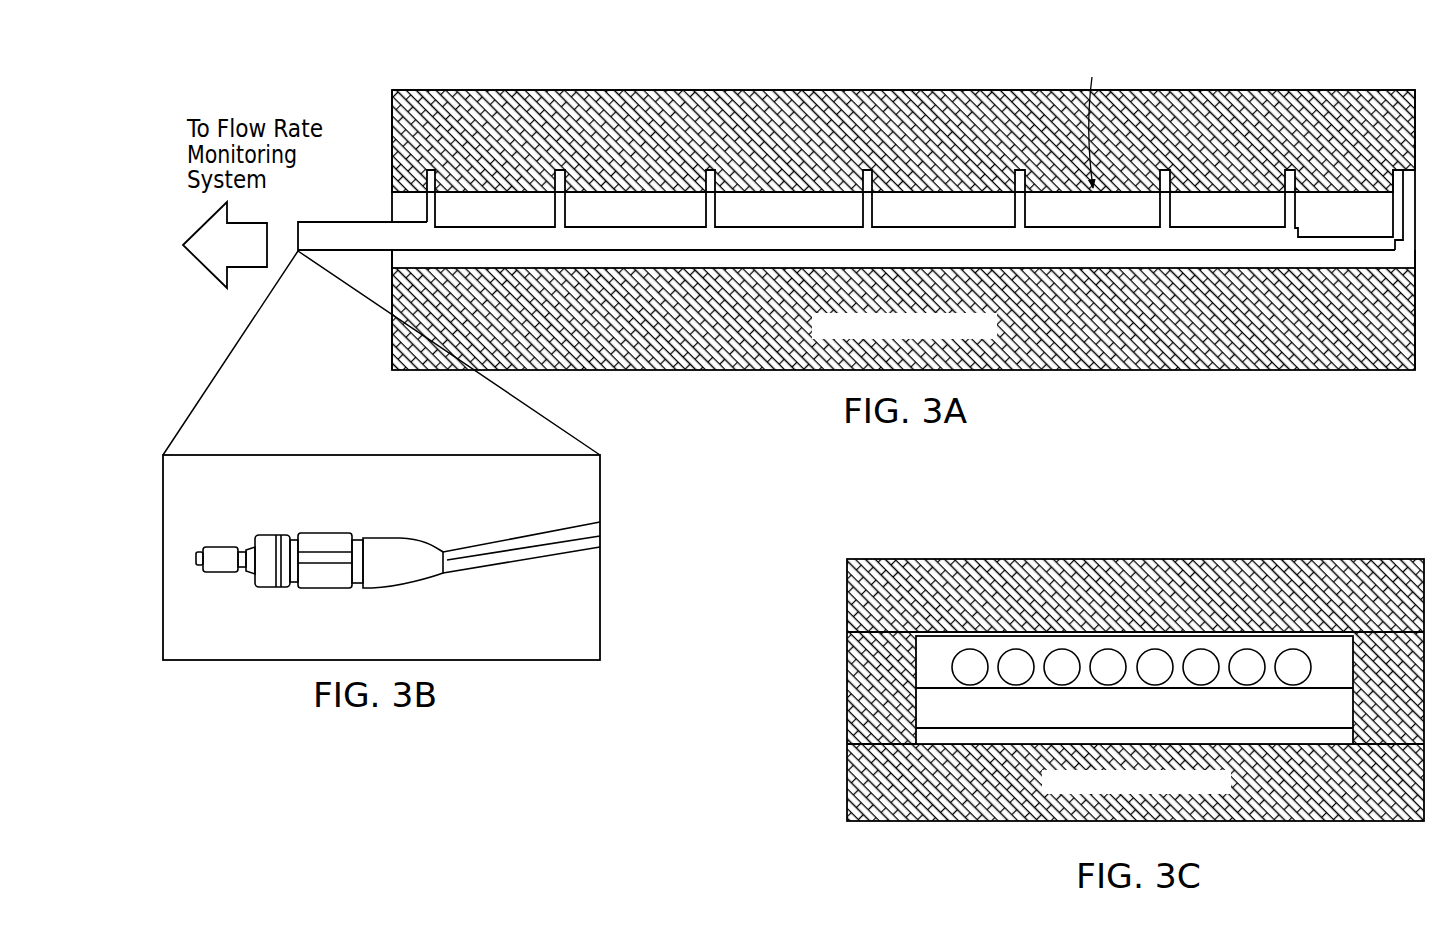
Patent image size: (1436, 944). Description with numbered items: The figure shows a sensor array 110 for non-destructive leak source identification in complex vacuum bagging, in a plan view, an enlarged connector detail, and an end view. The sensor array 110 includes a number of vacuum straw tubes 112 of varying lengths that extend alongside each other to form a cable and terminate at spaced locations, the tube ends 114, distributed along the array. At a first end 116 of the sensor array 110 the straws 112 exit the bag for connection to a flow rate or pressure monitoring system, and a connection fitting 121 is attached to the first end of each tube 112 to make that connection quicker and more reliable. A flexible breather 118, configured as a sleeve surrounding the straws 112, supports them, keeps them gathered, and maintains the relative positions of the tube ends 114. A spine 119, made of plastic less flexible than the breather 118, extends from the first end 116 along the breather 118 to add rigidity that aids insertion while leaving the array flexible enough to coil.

In FIG. 3A, the sensor array 110 is at (821, 88).
In FIG. 3C, the sensor array 110 is at (1206, 557).
In FIG. 3A, the vacuum straw tubes 112 is at (341, 221).
In FIG. 3B, the vacuum straw tubes 112 is at (497, 567).
In FIG. 3C, the vacuum straw tubes 112 is at (947, 667).
In FIG. 3A, the tube ends 114 is at (1013, 165).
In FIG. 3A, the first end of sensor array 116 is at (361, 98).
In FIG. 3A, the flexible breather 118 is at (1193, 355).
In FIG. 3C, the flexible breather 118 is at (1306, 575).
In FIG. 3A, the spine 119 is at (1295, 262).
In FIG. 3C, the spine 119 is at (927, 712).
In FIG. 3B, the connection fitting 121 is at (325, 591).